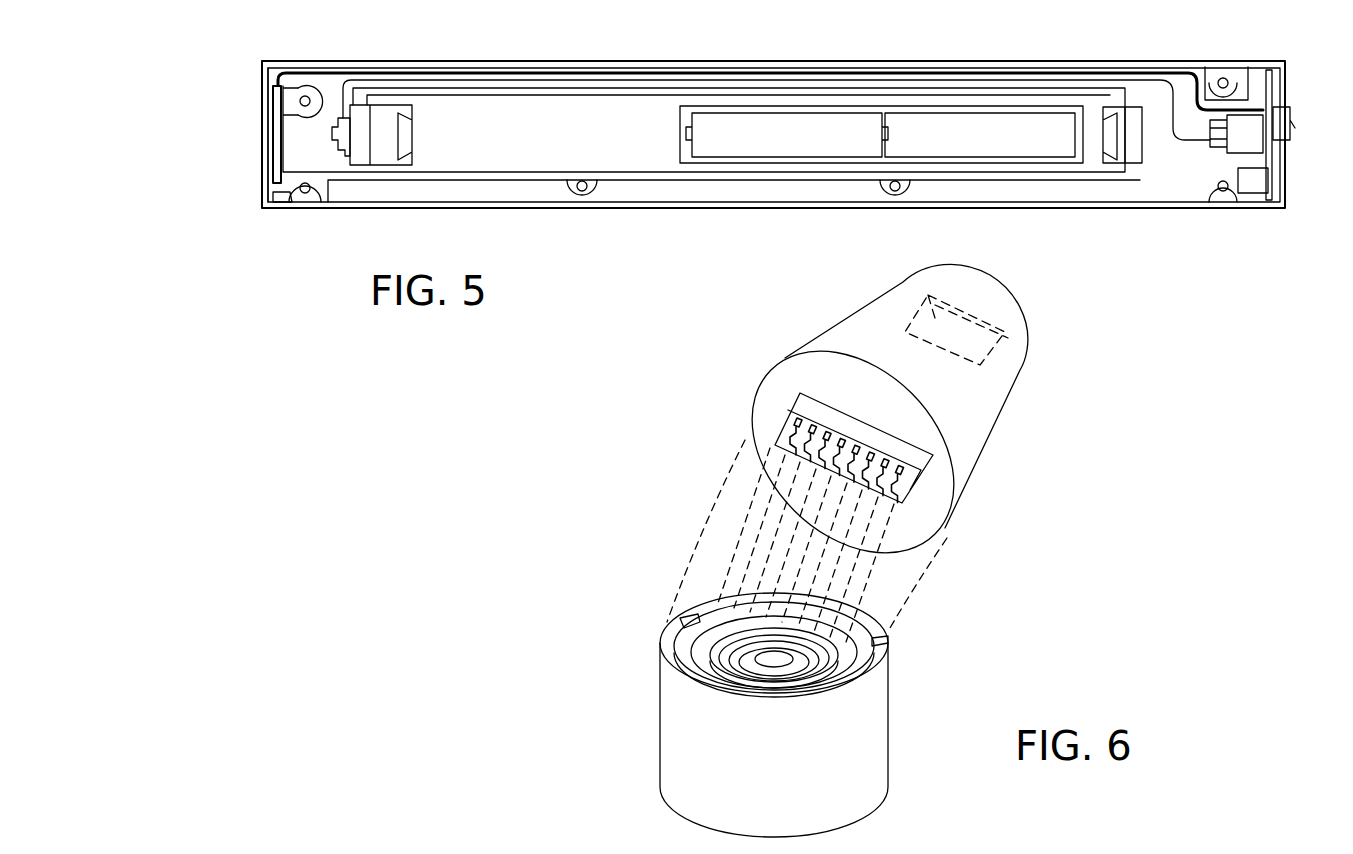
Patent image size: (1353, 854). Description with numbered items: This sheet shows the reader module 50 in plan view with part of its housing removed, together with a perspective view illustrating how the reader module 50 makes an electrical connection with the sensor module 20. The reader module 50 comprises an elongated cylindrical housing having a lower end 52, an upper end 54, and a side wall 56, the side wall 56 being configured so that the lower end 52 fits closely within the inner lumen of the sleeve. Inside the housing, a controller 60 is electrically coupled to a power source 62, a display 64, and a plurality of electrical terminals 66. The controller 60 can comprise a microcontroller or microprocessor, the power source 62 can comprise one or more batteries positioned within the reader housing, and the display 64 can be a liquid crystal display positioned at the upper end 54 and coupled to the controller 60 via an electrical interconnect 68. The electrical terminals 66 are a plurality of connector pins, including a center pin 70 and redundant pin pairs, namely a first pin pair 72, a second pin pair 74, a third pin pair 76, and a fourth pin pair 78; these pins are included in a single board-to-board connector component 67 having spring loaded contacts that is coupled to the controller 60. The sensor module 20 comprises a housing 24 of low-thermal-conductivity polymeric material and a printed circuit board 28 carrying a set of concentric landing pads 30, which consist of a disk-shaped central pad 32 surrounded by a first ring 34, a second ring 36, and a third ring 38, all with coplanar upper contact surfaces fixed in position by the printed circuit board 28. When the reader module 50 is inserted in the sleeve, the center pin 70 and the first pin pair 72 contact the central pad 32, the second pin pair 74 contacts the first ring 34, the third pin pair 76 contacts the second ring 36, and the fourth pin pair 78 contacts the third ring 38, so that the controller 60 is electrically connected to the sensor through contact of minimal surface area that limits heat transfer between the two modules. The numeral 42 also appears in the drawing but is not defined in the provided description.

In FIG. 6, the sensor module 20 is at (920, 688).
In FIG. 6, the housing 24 is at (663, 745).
In FIG. 6, the printed circuit board 28 is at (853, 660).
In FIG. 6, the landing pads 30 is at (697, 648).
In FIG. 6, the central pad 32 is at (757, 660).
In FIG. 6, the first ring 34 is at (802, 667).
In FIG. 6, the second ring 36 is at (723, 658).
In FIG. 6, the third ring 38 is at (837, 663).
In FIG. 6, the connector end 42 is at (734, 346).
In FIG. 5, the reader module 50 is at (326, 238).
In FIG. 6, the reader module 50 is at (1028, 478).
In FIG. 5, the lower end 52 is at (1285, 185).
In FIG. 5, the upper end 54 is at (262, 80).
In FIG. 6, the upper end 54 is at (1022, 315).
In FIG. 5, the side wall 56 is at (572, 61).
In FIG. 6, the side wall 56 is at (997, 400).
In FIG. 5, the controller 60 is at (1272, 158).
In FIG. 5, the power source 62 is at (795, 127).
In FIG. 5, the display 64 is at (275, 143).
In FIG. 6, the display 64 is at (905, 278).
In FIG. 5, the electrical terminals 66 is at (1291, 135).
In FIG. 6, the electrical terminals 66 is at (775, 415).
In FIG. 6, the board-to-board connector component 67 is at (923, 473).
In FIG. 5, the electrical interconnect 68 is at (317, 72).
In FIG. 6, the center pin 70 is at (850, 450).
In FIG. 6, the first pin pair 72 is at (837, 440).
In FIG. 6, the second pin pair 74 is at (815, 440).
In FIG. 6, the third pin pair 76 is at (790, 432).
In FIG. 6, the fourth pin pair 78 is at (795, 432).